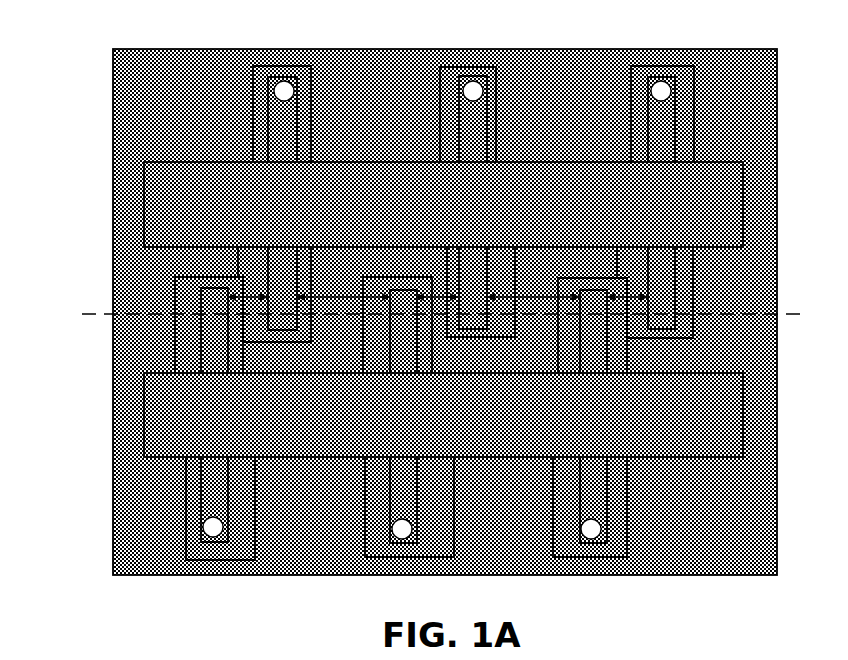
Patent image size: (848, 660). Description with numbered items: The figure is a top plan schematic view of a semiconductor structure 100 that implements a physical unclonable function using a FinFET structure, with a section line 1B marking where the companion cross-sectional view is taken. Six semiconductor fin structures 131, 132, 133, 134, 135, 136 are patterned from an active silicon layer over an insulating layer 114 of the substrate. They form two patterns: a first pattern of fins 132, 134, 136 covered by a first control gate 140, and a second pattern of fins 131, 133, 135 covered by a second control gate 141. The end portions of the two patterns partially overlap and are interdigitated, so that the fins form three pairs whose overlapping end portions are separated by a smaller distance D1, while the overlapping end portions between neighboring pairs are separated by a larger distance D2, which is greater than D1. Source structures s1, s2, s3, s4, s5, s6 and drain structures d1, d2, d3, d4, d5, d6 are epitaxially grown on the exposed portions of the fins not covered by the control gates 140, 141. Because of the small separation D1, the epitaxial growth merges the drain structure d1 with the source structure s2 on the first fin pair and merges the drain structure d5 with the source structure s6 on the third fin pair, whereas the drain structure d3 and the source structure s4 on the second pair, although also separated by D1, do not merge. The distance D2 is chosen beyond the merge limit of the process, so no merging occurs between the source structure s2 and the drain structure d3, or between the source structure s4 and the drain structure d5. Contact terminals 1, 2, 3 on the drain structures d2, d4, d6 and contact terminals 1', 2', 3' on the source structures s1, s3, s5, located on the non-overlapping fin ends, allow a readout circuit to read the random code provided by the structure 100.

The semiconductor structure 100 is at (460, 31).
The insulating layer 114 is at (118, 100).
The first control gate structure 140 is at (456, 211).
The second control gate structure 141 is at (456, 421).
The semiconductor fin structure 131 is at (251, 415).
The semiconductor fin structure 132 is at (315, 203).
The semiconductor fin structure 133 is at (441, 416).
The semiconductor fin structure 134 is at (510, 202).
The semiconductor fin structure 135 is at (627, 416).
The semiconductor fin structure 136 is at (698, 203).
The drain structure d1 is at (175, 357).
The drain structure d2 is at (253, 90).
The drain structure d3 is at (363, 352).
The drain structure d4 is at (440, 92).
The drain structure d5 is at (558, 357).
The drain structure d6 is at (631, 92).
The source structure s1 is at (186, 537).
The source structure s2 is at (236, 262).
The source structure s3 is at (365, 535).
The source structure s4 is at (516, 262).
The source structure s5 is at (553, 535).
The source structure s6 is at (694, 262).
The distance D1 is at (438, 275).
The distance D2 is at (438, 287).
The line 1B- 1B is at (445, 313).
The contact terminal 1 is at (284, 91).
The contact terminal 2 is at (473, 91).
The contact terminal 3 is at (661, 91).
The contact terminal 1' is at (213, 527).
The contact terminal 2' is at (402, 529).
The contact terminal 3' is at (591, 529).